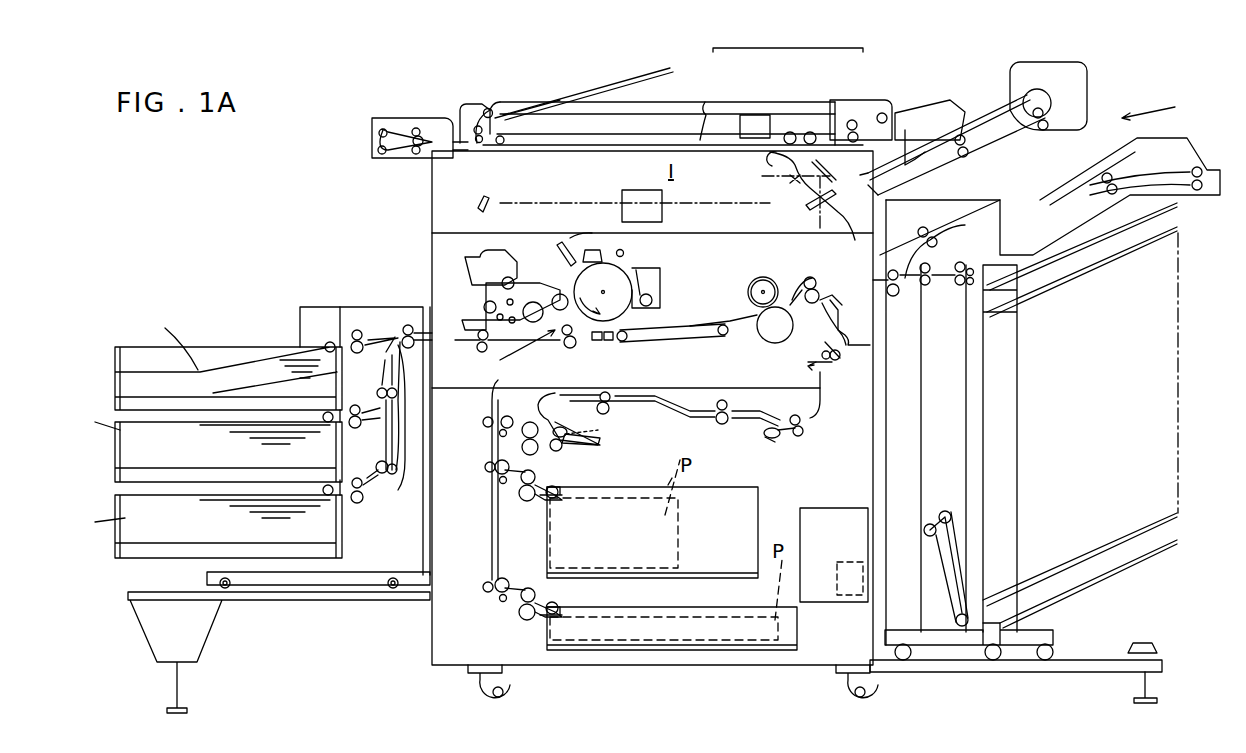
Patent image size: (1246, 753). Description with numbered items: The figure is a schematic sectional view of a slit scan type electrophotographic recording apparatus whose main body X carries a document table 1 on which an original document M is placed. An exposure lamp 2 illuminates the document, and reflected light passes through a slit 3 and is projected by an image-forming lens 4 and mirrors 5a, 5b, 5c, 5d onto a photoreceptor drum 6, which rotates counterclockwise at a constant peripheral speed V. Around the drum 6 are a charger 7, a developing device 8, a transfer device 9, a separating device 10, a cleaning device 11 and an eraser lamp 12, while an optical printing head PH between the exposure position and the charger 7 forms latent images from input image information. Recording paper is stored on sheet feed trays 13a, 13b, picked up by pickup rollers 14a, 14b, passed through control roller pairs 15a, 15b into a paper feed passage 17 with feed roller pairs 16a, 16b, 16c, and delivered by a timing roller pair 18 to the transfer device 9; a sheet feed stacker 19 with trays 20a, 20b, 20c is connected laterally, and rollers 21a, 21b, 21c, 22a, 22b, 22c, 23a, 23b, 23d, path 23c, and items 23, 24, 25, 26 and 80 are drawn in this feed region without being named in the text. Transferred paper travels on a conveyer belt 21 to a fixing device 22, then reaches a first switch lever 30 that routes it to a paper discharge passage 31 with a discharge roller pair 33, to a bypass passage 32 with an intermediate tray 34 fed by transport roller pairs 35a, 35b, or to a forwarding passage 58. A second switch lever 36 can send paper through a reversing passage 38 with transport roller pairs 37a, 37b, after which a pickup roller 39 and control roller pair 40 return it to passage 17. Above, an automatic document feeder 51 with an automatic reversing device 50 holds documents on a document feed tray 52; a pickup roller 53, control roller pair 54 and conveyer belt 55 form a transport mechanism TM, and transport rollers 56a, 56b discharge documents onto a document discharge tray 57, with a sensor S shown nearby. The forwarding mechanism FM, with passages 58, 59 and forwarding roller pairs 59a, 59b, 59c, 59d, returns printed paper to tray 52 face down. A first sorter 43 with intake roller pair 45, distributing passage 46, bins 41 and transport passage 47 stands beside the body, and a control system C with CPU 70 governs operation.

The document table 1 is at (705, 150).
The exposure lamp 2 is at (792, 130).
The slit 3 is at (827, 156).
The image-forming lens 4 is at (625, 190).
The first mirror 5a is at (792, 178).
The mirror 5b is at (818, 182).
The mirror 5c is at (808, 205).
The mirror 5d is at (480, 200).
The photoreceptor drum 6 is at (603, 250).
The charger 7 is at (588, 250).
The developing device 8 is at (480, 258).
The transfer device 9 is at (604, 342).
The separating device 10 is at (630, 342).
The cleaning device 11 is at (652, 272).
The eraser lamp 12 is at (624, 250).
The sheet feed tray 13a is at (758, 496).
The sheet feed tray 13b is at (800, 636).
The pickup roller 14a is at (570, 490).
The pickup roller 14b is at (572, 612).
The control roller pair 15a is at (530, 511).
The control roller pair 15b is at (524, 629).
The feed roller pair 16a is at (479, 429).
The feed roller pair 16b is at (482, 475).
The feed roller pair 16c is at (483, 602).
The paper feed passage 17 is at (490, 510).
The timing roller pair 18 is at (580, 354).
The sheet feed stacker 19 is at (305, 307).
The sheet feed tray 20a is at (115, 360).
The sheet feed tray 20b is at (115, 475).
The sheet feed tray 20c is at (115, 562).
The conveyer belt 21 is at (690, 335).
The pickup roller 21a is at (325, 342).
The pickup roller 21b is at (326, 412).
The pickup roller 21c is at (328, 498).
The fixing device 22 is at (752, 269).
The feed rollers 22a is at (352, 328).
The feed rollers 22b is at (347, 433).
The feed rollers 22c is at (361, 514).
The conveying rollers 23 is at (816, 318).
The conveying rollers 23a is at (403, 325).
The conveying rollers 23b is at (388, 403).
The conveying path 23c is at (392, 500).
The conveying rollers 23d is at (393, 486).
The feed path 24 is at (428, 320).
The manual feed path 25 is at (453, 335).
The feed rollers 26 is at (476, 358).
The first switch lever 30 is at (870, 336).
The paper discharge passage 31 is at (856, 319).
The bypass passage 32 is at (835, 405).
The discharge roller pair 33 is at (806, 278).
The intermediate tray 34 is at (745, 440).
The transport roller pair 35a is at (853, 360).
The transport roller pair 35b is at (808, 430).
The second switch lever 36 is at (775, 442).
The transport roller pair 37a is at (733, 395).
The transport roller pair 37b is at (616, 396).
The reversing passage 38 is at (665, 416).
The pickup roller 39 is at (572, 446).
The control roller pair 40 is at (526, 414).
The bins 41 is at (1116, 273).
The first sorter 43 is at (940, 620).
The intake roller pair 45 is at (900, 295).
The distributing passage 46 is at (966, 350).
The transport passage 47 is at (988, 219).
The automatic reversing device 50 is at (392, 120).
The automatic document feeder 51 is at (571, 81).
The document feed tray 52 is at (1010, 95).
The pickup roller 53 is at (880, 112).
The control roller pair 54 is at (848, 120).
The conveyer belt 55 is at (755, 135).
The transport roller 56a is at (470, 112).
The transport roller 56b is at (492, 108).
The document discharge tray 57 is at (650, 76).
The forwarding passage 58 is at (938, 150).
The forwarding passage 59 is at (1040, 126).
The forwarding roller pair 59a is at (905, 240).
The forwarding roller pair 59b is at (920, 205).
The forwarding roller pair 59c is at (962, 133).
The forwarding roller pair 59d is at (1058, 112).
The CPU 70 is at (860, 575).
The manual feed path 80 is at (534, 354).
The control system C is at (848, 508).
The forwarding mechanism FM is at (1165, 106).
The original document M is at (700, 138).
The optical printing head PH is at (560, 242).
The sensor S is at (910, 130).
The transport mechanism TM is at (788, 37).
The peripheral speed V is at (603, 292).
The main body X is at (432, 658).